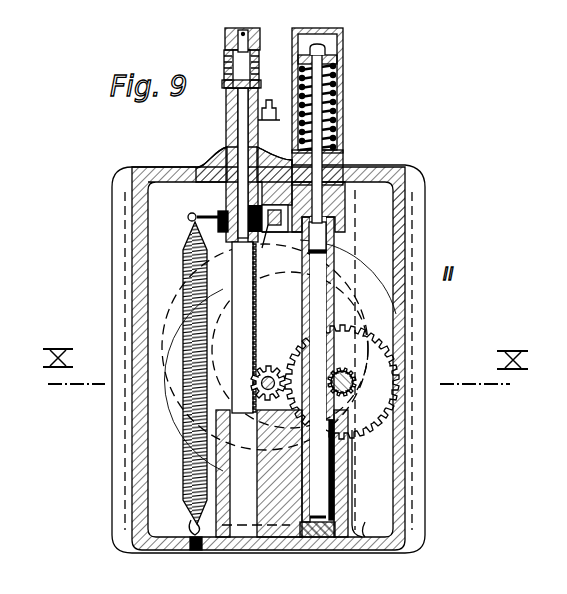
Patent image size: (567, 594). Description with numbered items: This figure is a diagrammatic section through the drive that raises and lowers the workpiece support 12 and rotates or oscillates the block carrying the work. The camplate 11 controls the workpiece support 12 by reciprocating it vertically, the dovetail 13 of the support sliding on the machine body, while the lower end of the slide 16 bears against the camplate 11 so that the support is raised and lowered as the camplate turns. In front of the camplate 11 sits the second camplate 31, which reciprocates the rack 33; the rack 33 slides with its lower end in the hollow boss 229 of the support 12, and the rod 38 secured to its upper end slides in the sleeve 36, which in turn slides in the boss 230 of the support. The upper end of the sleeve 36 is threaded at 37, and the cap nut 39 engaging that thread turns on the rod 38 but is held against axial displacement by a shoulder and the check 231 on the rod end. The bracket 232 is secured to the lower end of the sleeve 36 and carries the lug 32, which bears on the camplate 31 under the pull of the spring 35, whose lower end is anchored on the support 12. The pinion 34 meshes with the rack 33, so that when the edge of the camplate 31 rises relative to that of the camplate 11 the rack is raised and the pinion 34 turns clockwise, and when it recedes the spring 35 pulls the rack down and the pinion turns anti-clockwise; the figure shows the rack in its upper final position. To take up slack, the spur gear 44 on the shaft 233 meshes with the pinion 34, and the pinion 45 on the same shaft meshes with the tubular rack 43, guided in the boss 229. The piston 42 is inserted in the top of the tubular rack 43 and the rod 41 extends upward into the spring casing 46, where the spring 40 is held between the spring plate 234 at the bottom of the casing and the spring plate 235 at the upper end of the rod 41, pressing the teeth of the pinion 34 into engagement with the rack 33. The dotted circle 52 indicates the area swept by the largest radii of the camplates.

The camplate 11 is at (360, 462).
The workpiece support 12 is at (398, 501).
The dovetail 13 is at (193, 510).
The slide 16 is at (275, 246).
The second camplate 31 is at (356, 302).
The lug 32 is at (320, 232).
The rack 33 is at (247, 326).
The pinion 34 is at (268, 373).
The spring 35 is at (182, 236).
The sleeve 36 is at (227, 112).
The thread 37 is at (225, 70).
The rod 38 is at (243, 127).
The cap nut 39 is at (229, 44).
The spring 40 is at (338, 100).
The rod 41 is at (318, 121).
The piston 42 is at (394, 242).
The tubular rack 43 is at (332, 276).
The spur gear 44 is at (381, 436).
The pinion 45 is at (358, 392).
The spring casing 46 is at (340, 57).
The dotted circle 52 is at (358, 493).
The hollow boss 229 is at (298, 540).
The boss 230 is at (215, 160).
The check 231 is at (249, 33).
The bracket 232 is at (320, 206).
The shaft 233 is at (352, 380).
The spring plate 234 is at (345, 160).
The spring plate 235 is at (330, 52).